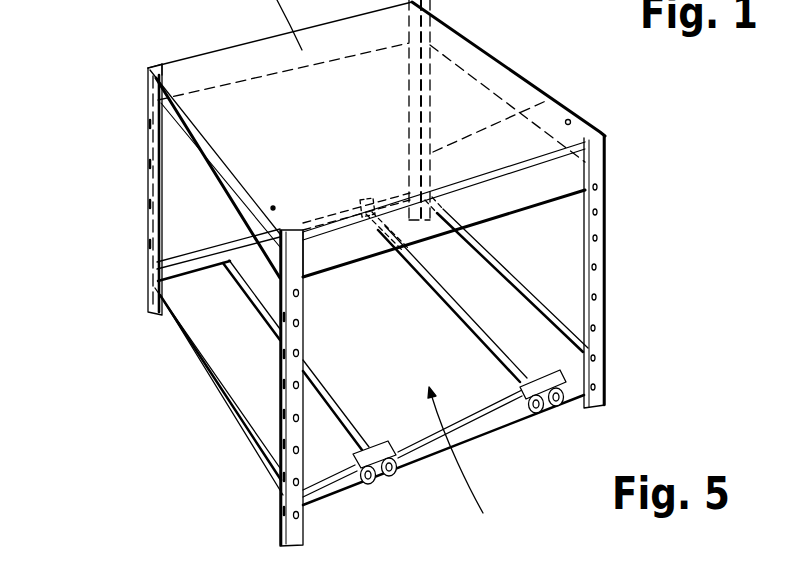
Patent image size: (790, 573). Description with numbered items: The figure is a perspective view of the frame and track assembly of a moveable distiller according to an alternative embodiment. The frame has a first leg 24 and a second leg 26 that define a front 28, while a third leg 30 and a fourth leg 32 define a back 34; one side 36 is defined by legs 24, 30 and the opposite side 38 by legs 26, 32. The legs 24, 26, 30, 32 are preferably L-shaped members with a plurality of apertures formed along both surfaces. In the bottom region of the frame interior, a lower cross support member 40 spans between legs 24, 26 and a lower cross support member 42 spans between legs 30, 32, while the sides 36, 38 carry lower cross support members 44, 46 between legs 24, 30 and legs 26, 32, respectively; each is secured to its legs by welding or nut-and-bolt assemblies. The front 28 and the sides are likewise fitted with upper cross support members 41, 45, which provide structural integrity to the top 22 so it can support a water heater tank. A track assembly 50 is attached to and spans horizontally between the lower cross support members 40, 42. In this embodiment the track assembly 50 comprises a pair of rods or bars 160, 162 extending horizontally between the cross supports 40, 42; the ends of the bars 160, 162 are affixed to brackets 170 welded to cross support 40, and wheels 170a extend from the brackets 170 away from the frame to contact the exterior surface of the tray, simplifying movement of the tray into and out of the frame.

The top 22 is at (212, 68).
The first leg 24 is at (283, 527).
The second leg 26 is at (603, 402).
The front 28 is at (500, 400).
The third leg 30 is at (150, 236).
The fourth leg 32 is at (548, 100).
The back 34 is at (173, 167).
The side 36 is at (235, 323).
The side 38 is at (562, 213).
The lower cross support member 40 is at (477, 427).
The upper cross support member 41 is at (363, 243).
The lower cross support member 42 is at (190, 255).
The lower cross support member 44 is at (222, 402).
The upper cross support member 45 is at (152, 100).
The lower cross support member 46 is at (523, 283).
The track assembly 50 is at (470, 461).
The bar 160 is at (345, 408).
The bar 162 is at (437, 293).
The brackets 170 is at (355, 457).
The wheels 170a is at (390, 474).